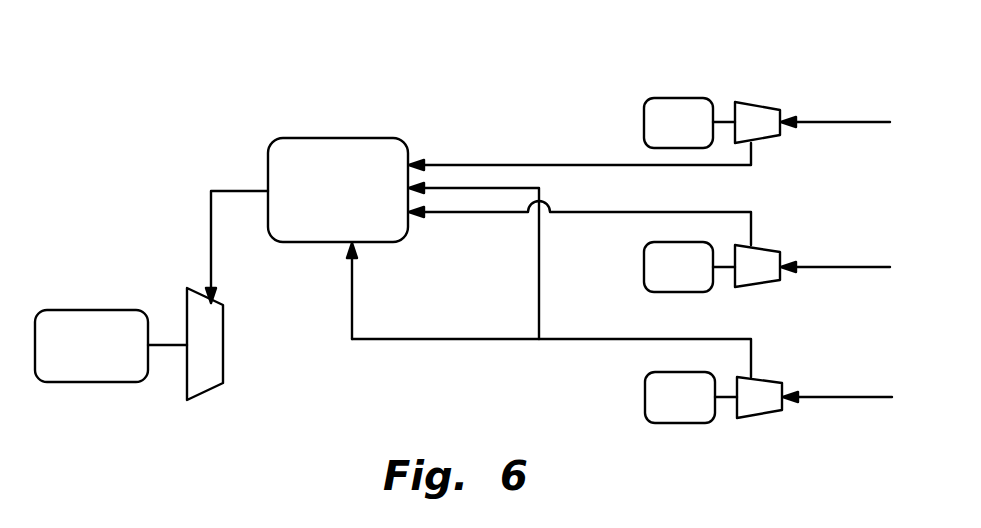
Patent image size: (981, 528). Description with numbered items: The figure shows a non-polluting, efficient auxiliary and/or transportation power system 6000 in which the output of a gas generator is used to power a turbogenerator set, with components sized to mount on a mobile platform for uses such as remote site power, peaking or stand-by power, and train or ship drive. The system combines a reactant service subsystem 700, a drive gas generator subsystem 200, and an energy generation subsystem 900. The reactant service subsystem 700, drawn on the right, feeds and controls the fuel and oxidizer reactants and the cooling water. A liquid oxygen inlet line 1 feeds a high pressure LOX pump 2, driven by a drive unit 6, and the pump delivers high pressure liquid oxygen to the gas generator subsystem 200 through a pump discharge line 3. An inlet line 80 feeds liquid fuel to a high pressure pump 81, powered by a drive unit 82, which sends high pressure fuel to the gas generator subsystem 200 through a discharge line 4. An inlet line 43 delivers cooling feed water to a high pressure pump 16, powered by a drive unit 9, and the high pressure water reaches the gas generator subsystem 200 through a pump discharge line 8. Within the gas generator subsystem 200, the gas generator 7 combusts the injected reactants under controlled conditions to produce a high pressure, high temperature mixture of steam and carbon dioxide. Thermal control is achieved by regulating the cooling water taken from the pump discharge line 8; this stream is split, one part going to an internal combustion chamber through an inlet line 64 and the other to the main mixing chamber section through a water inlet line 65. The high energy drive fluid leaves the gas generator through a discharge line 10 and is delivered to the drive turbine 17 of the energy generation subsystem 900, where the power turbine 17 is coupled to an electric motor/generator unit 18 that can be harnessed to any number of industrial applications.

The power system 6000 is at (535, 42).
The gas generator subsystem 200 is at (364, 181).
The discharge line 10 is at (247, 188).
The drive turbine 17 is at (187, 290).
The electric motor/generator unit 18 is at (97, 308).
The energy generation subsystem 900 is at (126, 427).
The gas generator 7 is at (315, 243).
The water inlet line 65 is at (352, 312).
The discharge line 4 is at (583, 165).
The inlet line 64 is at (537, 275).
The pump discharge line 3 is at (600, 213).
The pump discharge line 8 is at (620, 338).
The drive unit 82 is at (643, 115).
The high pressure pump 81 is at (785, 108).
The inlet line 80 is at (843, 122).
The reactant service subsystem 700 is at (922, 190).
The drive unit 6 is at (645, 262).
The high pressure LOX pump 2 is at (782, 252).
The liquid oxygen inlet line 1 is at (843, 267).
The drive unit 9 is at (647, 400).
The high pressure pump 16 is at (782, 383).
The inlet line 43 is at (843, 397).